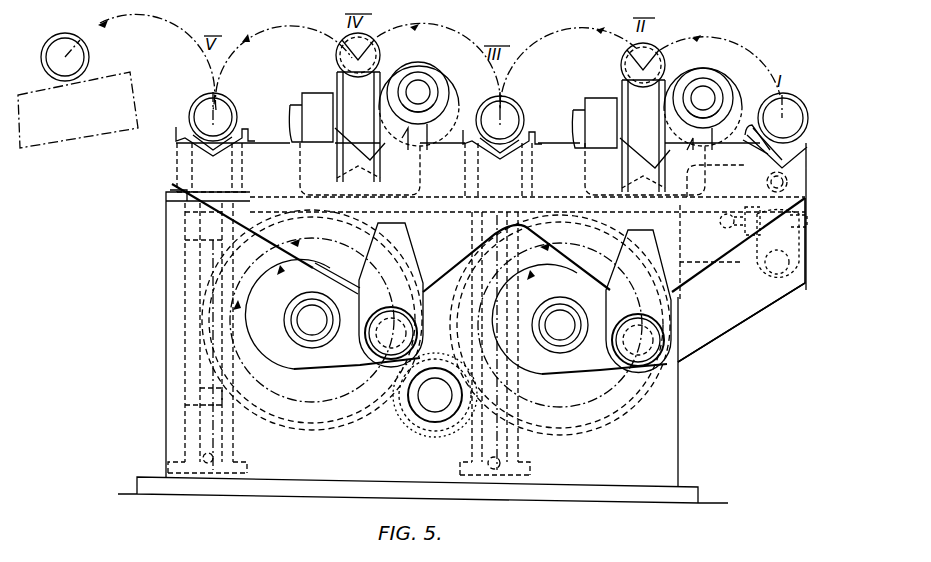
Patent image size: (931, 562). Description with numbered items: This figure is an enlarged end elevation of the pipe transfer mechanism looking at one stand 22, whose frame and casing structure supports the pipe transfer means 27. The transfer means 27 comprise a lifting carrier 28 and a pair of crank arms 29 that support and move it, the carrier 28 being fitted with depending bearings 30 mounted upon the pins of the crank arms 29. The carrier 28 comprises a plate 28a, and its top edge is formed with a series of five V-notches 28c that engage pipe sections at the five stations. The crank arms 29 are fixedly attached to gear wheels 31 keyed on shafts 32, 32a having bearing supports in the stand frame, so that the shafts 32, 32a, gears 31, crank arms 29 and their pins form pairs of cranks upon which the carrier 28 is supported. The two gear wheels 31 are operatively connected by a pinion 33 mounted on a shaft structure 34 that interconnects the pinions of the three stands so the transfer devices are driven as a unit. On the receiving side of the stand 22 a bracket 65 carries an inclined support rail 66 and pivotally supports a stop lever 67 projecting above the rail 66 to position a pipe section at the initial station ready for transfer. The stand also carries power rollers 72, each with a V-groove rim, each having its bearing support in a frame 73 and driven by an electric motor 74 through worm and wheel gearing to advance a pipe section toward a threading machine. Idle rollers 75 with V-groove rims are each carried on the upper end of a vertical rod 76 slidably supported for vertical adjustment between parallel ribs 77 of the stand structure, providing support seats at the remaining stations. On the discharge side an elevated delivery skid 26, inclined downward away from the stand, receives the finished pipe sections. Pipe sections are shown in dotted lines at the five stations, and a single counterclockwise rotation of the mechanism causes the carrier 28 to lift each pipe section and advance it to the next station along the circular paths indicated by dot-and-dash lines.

The stand 22 is at (164, 227).
The delivery skid 26 is at (112, 74).
The pipe transfer means 27 is at (272, 248).
The carrier 28 is at (460, 274).
The plate 28a is at (690, 268).
The V-notch 28c is at (762, 172).
The crank arm 29 is at (348, 392).
The depending bearing 30 is at (391, 318).
The gear wheel 31 is at (304, 430).
The shaft 32 is at (560, 340).
The shaft 32a is at (312, 335).
The pinion 33 is at (440, 440).
The shaft structure 34 is at (420, 412).
The bracket 65 is at (716, 338).
The inclined support rail 66 is at (808, 118).
The stop lever 67 is at (752, 125).
The power roller 72 is at (340, 78).
The frame 73 is at (315, 103).
The electric motor 74 is at (447, 100).
The idle roller 75 is at (202, 126).
The vertical rod 76 is at (185, 276).
The rib 77 is at (185, 318).